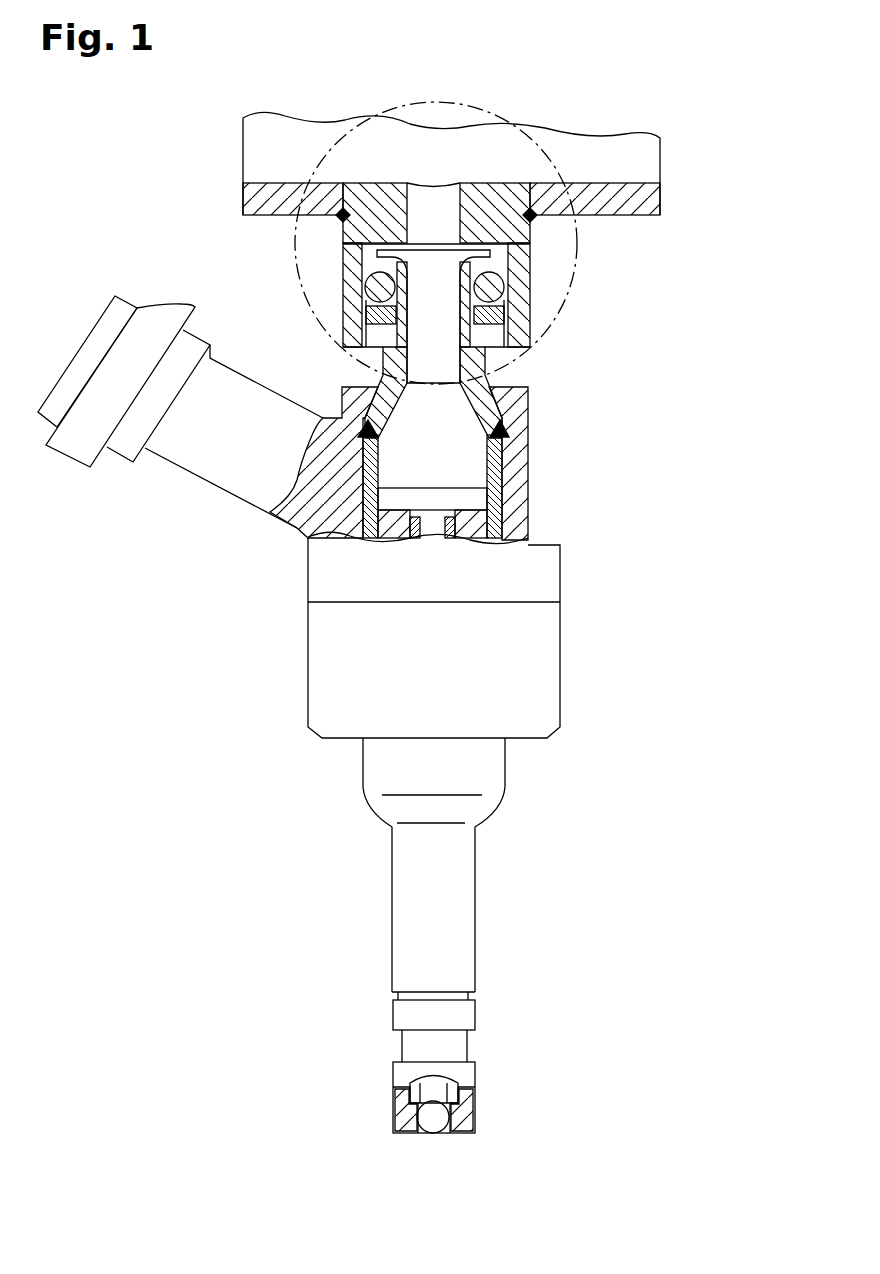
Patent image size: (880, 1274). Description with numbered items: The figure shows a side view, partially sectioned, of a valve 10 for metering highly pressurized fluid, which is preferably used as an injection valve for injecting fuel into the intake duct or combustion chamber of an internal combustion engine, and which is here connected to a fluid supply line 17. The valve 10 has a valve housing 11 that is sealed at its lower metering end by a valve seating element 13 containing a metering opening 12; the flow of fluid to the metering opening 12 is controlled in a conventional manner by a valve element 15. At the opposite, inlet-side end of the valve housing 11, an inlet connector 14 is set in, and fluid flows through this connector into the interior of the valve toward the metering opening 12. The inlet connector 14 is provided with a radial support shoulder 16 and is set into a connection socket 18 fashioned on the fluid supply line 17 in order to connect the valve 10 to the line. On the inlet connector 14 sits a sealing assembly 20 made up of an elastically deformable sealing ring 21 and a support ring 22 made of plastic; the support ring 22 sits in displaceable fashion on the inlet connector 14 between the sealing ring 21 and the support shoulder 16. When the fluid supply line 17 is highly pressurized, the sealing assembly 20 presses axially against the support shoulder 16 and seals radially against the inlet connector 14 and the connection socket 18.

The valve 10 is at (612, 659).
The valve housing 11 is at (518, 464).
The metering opening 12 is at (433, 1137).
The valve seating element 13 is at (476, 1115).
The inlet connector 14 is at (466, 368).
The valve element 15 is at (434, 1092).
The support shoulder 16 is at (488, 357).
The fluid supply line 17 is at (633, 160).
The connection socket 18 is at (346, 268).
The sealing assembly 20 is at (356, 306).
The sealing ring 21 is at (505, 284).
The support ring 22 is at (500, 321).